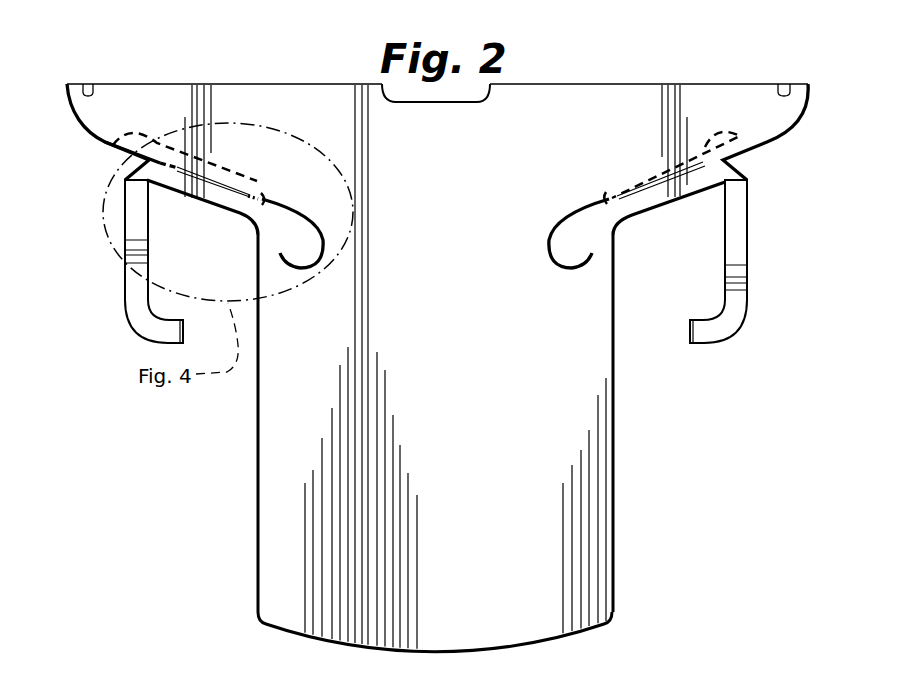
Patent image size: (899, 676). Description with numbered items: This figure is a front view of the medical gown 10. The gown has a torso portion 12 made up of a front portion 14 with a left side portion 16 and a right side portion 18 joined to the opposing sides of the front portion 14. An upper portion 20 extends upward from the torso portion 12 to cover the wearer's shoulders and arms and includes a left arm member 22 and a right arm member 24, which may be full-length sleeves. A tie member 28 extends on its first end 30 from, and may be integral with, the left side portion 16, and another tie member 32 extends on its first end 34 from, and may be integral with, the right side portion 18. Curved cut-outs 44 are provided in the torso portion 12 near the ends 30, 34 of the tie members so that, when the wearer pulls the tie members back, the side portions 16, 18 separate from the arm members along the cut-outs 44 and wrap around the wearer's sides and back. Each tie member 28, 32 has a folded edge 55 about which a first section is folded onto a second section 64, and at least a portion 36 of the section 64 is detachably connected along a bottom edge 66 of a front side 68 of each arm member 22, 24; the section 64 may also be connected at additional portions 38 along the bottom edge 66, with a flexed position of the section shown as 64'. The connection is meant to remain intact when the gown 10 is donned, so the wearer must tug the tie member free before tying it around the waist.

The medical gown 10 is at (101, 45).
The torso portion 12 is at (468, 385).
The front portion 14 is at (547, 607).
The left side portion 16 is at (600, 372).
The right side portion 18 is at (275, 477).
The upper portion 20 is at (518, 132).
The left arm member 22 is at (750, 95).
The right arm member 24 is at (222, 92).
The tie member 28 is at (741, 223).
The first end 30 is at (600, 248).
The tie member 32 is at (133, 292).
The first end 34 is at (287, 228).
The portion 36 is at (147, 134).
The additional portions 38 is at (262, 178).
The curved cut-outs 44 is at (305, 268).
The folded edge 55 is at (177, 327).
The second section 64 is at (711, 208).
The flange (flexed) 64' is at (151, 194).
The bottom edge 66 is at (652, 173).
The front side 68 is at (341, 100).